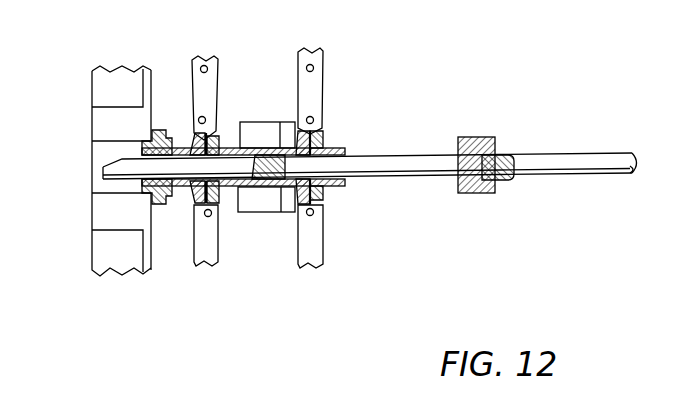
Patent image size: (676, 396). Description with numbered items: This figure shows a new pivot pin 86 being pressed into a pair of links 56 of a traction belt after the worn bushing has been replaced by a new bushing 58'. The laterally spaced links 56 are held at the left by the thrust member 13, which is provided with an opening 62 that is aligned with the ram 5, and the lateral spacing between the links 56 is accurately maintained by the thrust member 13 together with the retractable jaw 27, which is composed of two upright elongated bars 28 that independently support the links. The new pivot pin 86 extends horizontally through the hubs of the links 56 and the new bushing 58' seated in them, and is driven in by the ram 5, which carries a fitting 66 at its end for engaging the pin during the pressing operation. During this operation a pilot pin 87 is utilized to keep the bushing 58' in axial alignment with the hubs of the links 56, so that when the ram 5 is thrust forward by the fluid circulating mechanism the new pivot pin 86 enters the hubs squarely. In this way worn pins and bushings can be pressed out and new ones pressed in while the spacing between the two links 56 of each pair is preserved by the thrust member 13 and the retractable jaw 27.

The ram 5 is at (577, 157).
The thrust member 13 is at (91, 248).
The retractable jaw 27 is at (287, 216).
The upright elongated bars 28 is at (291, 126).
The links 56 is at (207, 58).
The new bushing 58' is at (268, 130).
The opening 62 is at (101, 151).
The fitting 66 is at (485, 135).
The new pivot pin 86 is at (423, 163).
The pilot pin 87 is at (233, 186).